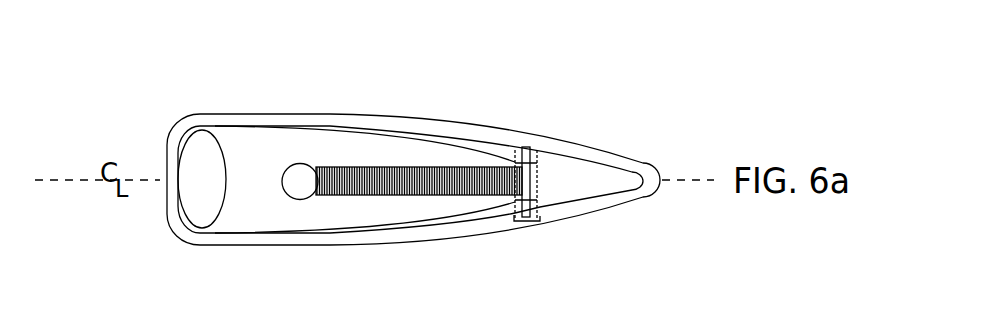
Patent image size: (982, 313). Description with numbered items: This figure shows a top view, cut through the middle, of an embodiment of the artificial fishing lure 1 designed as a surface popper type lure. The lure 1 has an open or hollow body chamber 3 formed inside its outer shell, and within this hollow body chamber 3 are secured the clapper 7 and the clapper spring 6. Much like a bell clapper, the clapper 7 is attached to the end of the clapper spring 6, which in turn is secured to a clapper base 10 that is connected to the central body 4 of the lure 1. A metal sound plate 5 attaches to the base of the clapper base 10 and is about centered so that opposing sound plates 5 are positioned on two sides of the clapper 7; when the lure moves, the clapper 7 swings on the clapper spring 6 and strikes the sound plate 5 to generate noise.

The artificial fishing lure 1 is at (258, 115).
The hollow body chamber 3 is at (248, 193).
The central body 4 is at (527, 222).
The metal sound plate 5 is at (447, 217).
The clapper spring 6 is at (388, 196).
The clapper 7 is at (297, 187).
The clapper base 10 is at (531, 197).